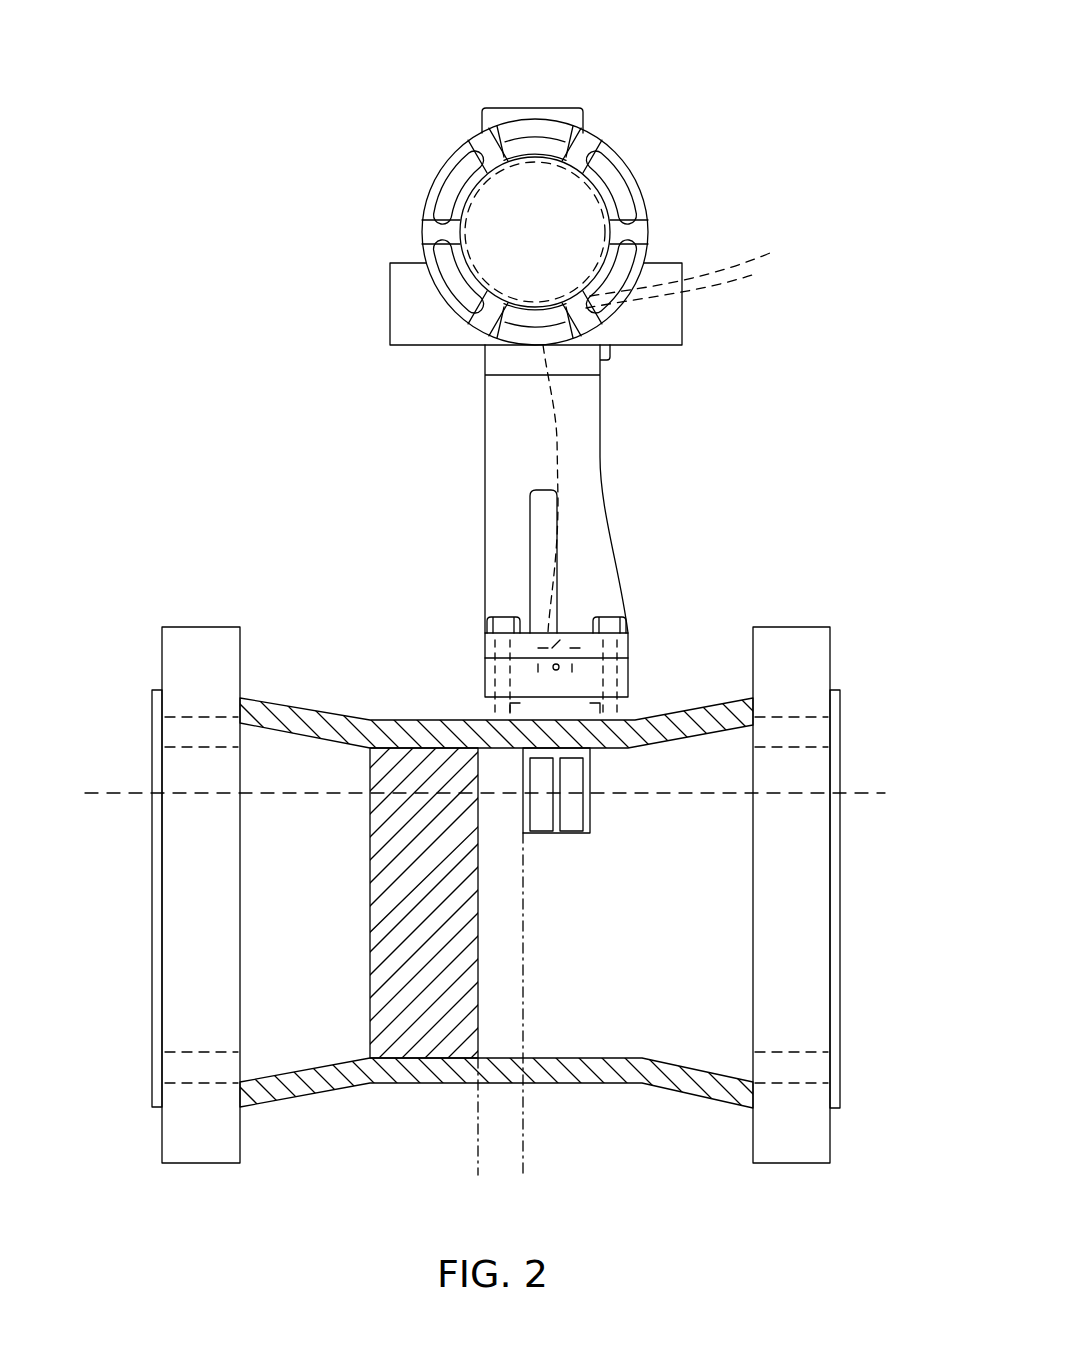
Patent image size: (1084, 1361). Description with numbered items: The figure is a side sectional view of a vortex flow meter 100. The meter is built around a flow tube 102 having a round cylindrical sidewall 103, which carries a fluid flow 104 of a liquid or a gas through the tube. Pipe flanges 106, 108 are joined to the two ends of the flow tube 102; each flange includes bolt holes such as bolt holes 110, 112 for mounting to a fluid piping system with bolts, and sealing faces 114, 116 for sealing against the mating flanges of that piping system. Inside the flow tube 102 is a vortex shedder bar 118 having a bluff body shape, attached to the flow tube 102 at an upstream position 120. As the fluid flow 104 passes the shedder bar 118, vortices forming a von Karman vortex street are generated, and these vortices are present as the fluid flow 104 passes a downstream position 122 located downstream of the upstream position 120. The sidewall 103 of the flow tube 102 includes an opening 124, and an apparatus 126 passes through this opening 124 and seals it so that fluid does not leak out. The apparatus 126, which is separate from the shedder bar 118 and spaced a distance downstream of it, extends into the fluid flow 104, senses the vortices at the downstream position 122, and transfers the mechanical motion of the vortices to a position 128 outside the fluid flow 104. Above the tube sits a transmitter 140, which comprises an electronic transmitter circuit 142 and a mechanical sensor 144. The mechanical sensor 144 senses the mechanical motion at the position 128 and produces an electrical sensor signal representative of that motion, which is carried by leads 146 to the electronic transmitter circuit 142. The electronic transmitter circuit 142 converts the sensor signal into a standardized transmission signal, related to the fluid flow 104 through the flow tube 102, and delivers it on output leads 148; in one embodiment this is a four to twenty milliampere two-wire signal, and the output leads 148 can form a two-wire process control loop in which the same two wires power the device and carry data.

The vortex flow meter 100 is at (700, 112).
The flow tube 102 is at (267, 1103).
The sidewall 103 is at (622, 750).
The fluid flow 104 is at (708, 800).
The pipe flange 106 is at (200, 627).
The pipe flange 108 is at (800, 627).
The bolt hole 110 is at (180, 1048).
The bolt hole 112 is at (805, 1050).
The sealing face 114 is at (153, 702).
The sealing face 116 is at (841, 705).
The vortex shedder bar 118 is at (440, 925).
The upstream position 120 is at (476, 1130).
The downstream position 122 is at (527, 1120).
The opening 124 is at (655, 712).
The apparatus 126 is at (590, 821).
The position 128 is at (583, 630).
The transmitter 140 is at (528, 107).
The electronic transmitter circuit 142 is at (432, 206).
The mechanical sensor 144 is at (565, 630).
The leads 146 is at (560, 440).
The output leads 148 is at (733, 277).